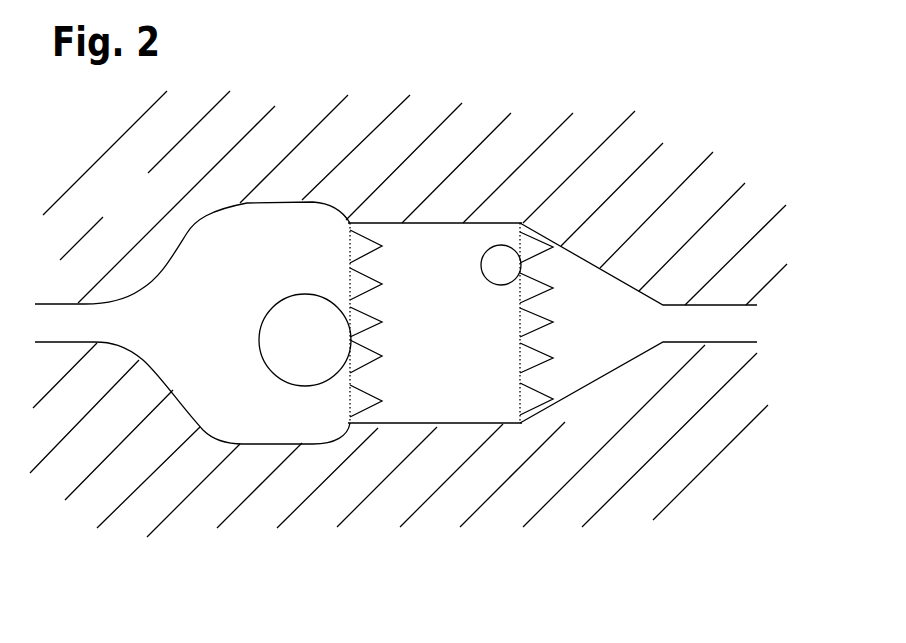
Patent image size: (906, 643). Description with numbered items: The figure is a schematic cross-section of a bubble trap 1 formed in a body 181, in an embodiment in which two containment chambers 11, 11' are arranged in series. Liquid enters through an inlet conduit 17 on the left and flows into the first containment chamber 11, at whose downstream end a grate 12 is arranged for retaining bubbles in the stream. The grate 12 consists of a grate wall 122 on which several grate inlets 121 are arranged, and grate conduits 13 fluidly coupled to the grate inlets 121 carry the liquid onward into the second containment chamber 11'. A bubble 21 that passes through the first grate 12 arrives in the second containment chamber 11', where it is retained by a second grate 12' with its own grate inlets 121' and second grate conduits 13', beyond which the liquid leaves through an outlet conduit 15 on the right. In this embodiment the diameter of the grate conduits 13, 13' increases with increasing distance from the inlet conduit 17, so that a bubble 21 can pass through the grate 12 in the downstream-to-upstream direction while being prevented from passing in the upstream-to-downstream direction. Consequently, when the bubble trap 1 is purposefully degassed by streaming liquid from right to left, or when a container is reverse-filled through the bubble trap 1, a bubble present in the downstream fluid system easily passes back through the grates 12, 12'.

The bubble trap 1 is at (738, 162).
The containment chamber 11 is at (217, 323).
The second containment chamber 11' is at (435, 323).
The grate 12 is at (318, 214).
The second grate 12' is at (615, 393).
The grate inlet 121 is at (297, 238).
The grate wall 122 is at (289, 400).
The grate inlet of second grate 121' is at (502, 361).
The grate conduit 13 is at (417, 409).
The second grate conduit 13' is at (564, 229).
The outlet conduit 15 is at (713, 327).
The inlet conduit 17 is at (77, 328).
The body 181 is at (136, 208).
The bubble 21 is at (500, 260).